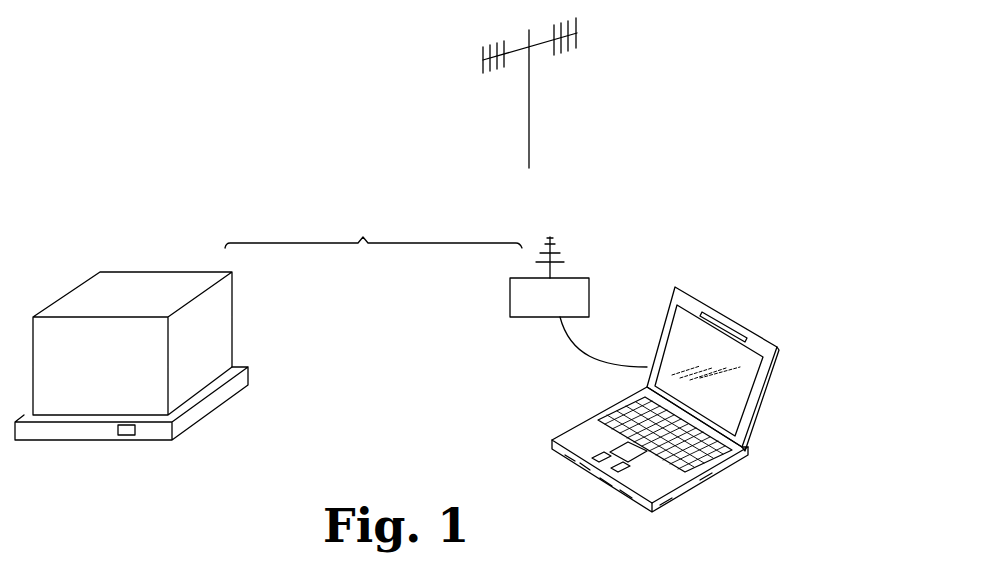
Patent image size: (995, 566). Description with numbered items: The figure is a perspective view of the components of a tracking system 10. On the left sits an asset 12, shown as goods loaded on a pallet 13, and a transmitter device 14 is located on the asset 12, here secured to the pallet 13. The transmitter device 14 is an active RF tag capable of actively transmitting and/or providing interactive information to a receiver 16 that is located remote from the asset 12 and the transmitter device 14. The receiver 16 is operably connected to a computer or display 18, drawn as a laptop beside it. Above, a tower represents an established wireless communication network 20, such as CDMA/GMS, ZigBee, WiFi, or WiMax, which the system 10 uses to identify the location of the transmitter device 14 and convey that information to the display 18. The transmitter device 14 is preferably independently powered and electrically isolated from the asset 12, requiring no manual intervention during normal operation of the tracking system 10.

The system 10 is at (326, 210).
The asset 12 is at (133, 294).
The pallet 13 is at (213, 400).
The transmitter device 14 is at (132, 442).
The receiver 16 is at (578, 285).
The computer or display 18 is at (730, 317).
The wireless communication network 20 is at (566, 66).